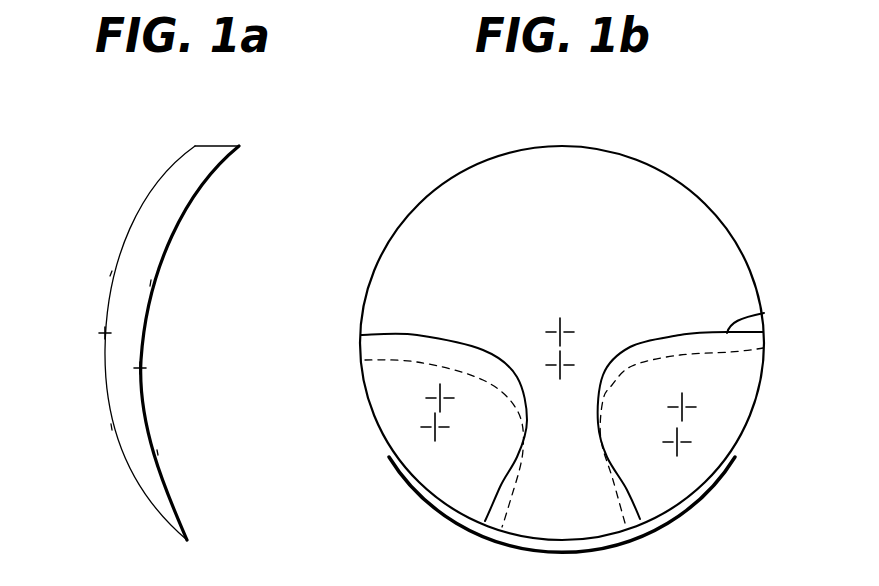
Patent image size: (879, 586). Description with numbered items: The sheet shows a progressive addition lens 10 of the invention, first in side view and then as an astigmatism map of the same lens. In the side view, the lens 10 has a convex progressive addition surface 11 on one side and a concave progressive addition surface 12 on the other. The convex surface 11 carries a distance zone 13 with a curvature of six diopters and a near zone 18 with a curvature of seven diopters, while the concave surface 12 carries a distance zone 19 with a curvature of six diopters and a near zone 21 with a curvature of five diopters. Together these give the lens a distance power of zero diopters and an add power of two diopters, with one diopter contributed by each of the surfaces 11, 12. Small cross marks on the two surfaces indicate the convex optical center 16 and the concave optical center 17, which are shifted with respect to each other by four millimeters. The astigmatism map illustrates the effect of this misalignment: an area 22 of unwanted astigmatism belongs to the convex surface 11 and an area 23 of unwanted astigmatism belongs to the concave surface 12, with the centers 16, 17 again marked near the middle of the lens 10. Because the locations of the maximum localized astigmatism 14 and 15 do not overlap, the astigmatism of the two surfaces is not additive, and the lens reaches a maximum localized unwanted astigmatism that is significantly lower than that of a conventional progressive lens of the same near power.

In FIG. 1a, the lens 10 is at (182, 312).
In FIG. 1b, the lens 10 is at (680, 146).
In FIG. 1a, the convex progressive addition surface 11 is at (121, 219).
In FIG. 1a, the concave progressive addition surface 12 is at (179, 234).
In FIG. 1a, the distance zone 13 is at (110, 276).
In FIG. 1b, the maximum localized astigmatism 14 is at (438, 398).
In FIG. 1b, the maximum localized astigmatism 15 is at (440, 429).
In FIG. 1a, the convex optical center 16 is at (105, 334).
In FIG. 1b, the convex optical center 16 is at (561, 330).
In FIG. 1a, the concave optical center 17 is at (141, 367).
In FIG. 1b, the concave optical center 17 is at (561, 363).
In FIG. 1a, the near zone 18 is at (112, 430).
In FIG. 1a, the distance zone 19 is at (151, 280).
In FIG. 1a, the near zone 21 is at (158, 455).
In FIG. 1b, the area of unwanted astigmatism 22 is at (765, 318).
In FIG. 1b, the area of unwanted astigmatism 23 is at (769, 347).